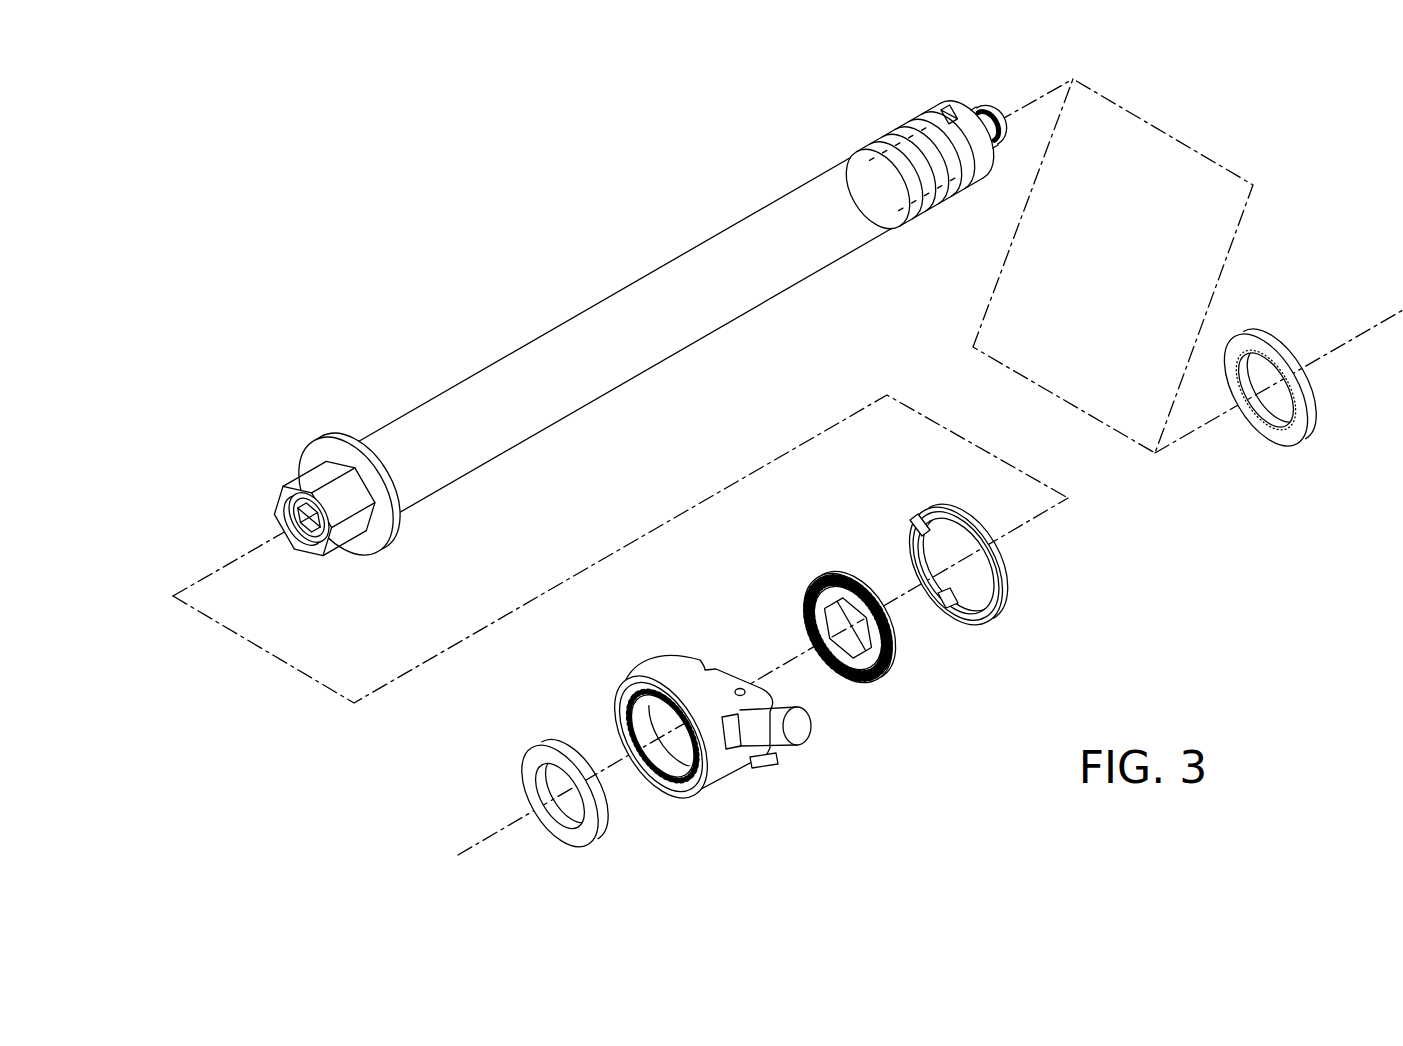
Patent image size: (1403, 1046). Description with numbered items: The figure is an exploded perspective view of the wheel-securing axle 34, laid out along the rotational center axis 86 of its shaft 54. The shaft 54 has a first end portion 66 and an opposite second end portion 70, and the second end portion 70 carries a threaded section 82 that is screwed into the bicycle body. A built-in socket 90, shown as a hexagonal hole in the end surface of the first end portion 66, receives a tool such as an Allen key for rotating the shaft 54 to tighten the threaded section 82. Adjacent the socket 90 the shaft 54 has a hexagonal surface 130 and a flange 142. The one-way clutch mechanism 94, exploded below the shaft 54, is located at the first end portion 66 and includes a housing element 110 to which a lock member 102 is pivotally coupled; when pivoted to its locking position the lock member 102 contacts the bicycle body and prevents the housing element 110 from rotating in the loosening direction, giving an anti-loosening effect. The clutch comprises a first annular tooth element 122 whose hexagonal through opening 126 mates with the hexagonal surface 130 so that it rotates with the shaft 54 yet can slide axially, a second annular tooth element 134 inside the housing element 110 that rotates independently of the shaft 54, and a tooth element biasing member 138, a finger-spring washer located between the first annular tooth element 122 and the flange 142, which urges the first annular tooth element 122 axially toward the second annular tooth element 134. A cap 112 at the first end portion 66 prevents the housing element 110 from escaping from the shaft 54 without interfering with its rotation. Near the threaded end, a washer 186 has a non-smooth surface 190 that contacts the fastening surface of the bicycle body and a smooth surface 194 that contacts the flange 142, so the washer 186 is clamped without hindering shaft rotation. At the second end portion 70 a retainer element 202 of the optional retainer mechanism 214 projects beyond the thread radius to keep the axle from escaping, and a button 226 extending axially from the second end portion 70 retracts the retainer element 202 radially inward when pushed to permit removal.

The wheel-securing axle 34 is at (290, 221).
The shaft 54 is at (598, 303).
The first end portion 66 is at (320, 491).
The second end portion 70 is at (1010, 134).
The threaded section 82 is at (887, 133).
The rotational center axis 86 is at (192, 584).
The built-in socket 90 is at (297, 543).
The one-way clutch mechanism 94 is at (1035, 634).
The lock member 102 is at (808, 732).
The housing element 110 is at (744, 771).
The cap 112 is at (533, 752).
The first annular tooth element 122 is at (804, 619).
The hexagonal through opening 126 is at (830, 612).
The hexagonal surface 130 is at (363, 530).
The second annular tooth element 134 is at (672, 748).
The tooth element biasing member 138 is at (944, 505).
The flange 142 is at (350, 443).
The washer 186 is at (1271, 379).
The non-smooth surface 190 is at (1287, 340).
The smooth surface 194 is at (1240, 348).
The retainer element 202 is at (947, 117).
The retainer mechanism 214 is at (978, 233).
The button 226 is at (997, 132).